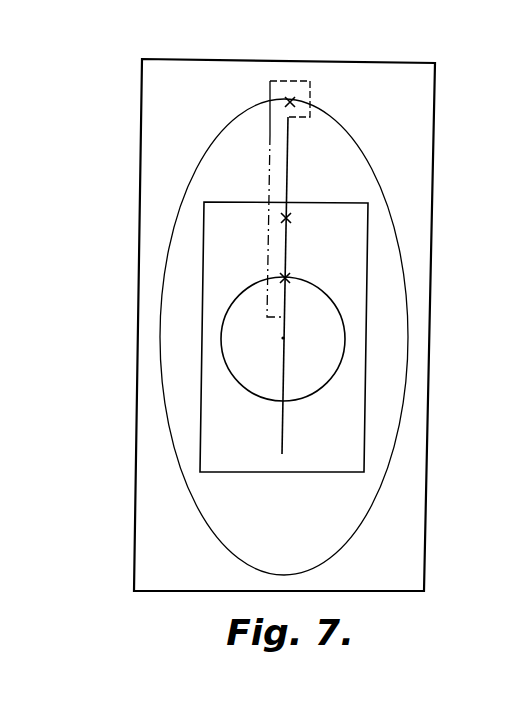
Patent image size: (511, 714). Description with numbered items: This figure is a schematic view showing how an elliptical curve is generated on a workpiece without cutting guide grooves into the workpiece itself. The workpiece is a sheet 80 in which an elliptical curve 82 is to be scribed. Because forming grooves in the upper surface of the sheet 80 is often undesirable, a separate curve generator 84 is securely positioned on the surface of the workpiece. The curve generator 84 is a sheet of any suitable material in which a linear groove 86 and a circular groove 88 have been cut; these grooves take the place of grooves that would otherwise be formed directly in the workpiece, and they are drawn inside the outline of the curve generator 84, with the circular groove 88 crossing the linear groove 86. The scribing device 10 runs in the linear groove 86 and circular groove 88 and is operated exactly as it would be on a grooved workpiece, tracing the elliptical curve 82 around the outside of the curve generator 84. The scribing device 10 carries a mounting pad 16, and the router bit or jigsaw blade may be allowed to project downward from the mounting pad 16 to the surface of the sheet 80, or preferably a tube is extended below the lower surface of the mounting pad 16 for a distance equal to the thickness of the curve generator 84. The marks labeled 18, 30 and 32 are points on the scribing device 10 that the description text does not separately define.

The scribing device 10 is at (268, 173).
The mounting pad 16 is at (310, 93).
The reference mark 18 is at (290, 102).
The center mark 30 is at (285, 278).
The alignment mark 32 is at (286, 218).
The sheet 80 is at (418, 98).
The elliptical curve 82 is at (372, 168).
The curve generator 84 is at (204, 237).
The linear groove 86 is at (282, 422).
The circular groove 88 is at (220, 337).